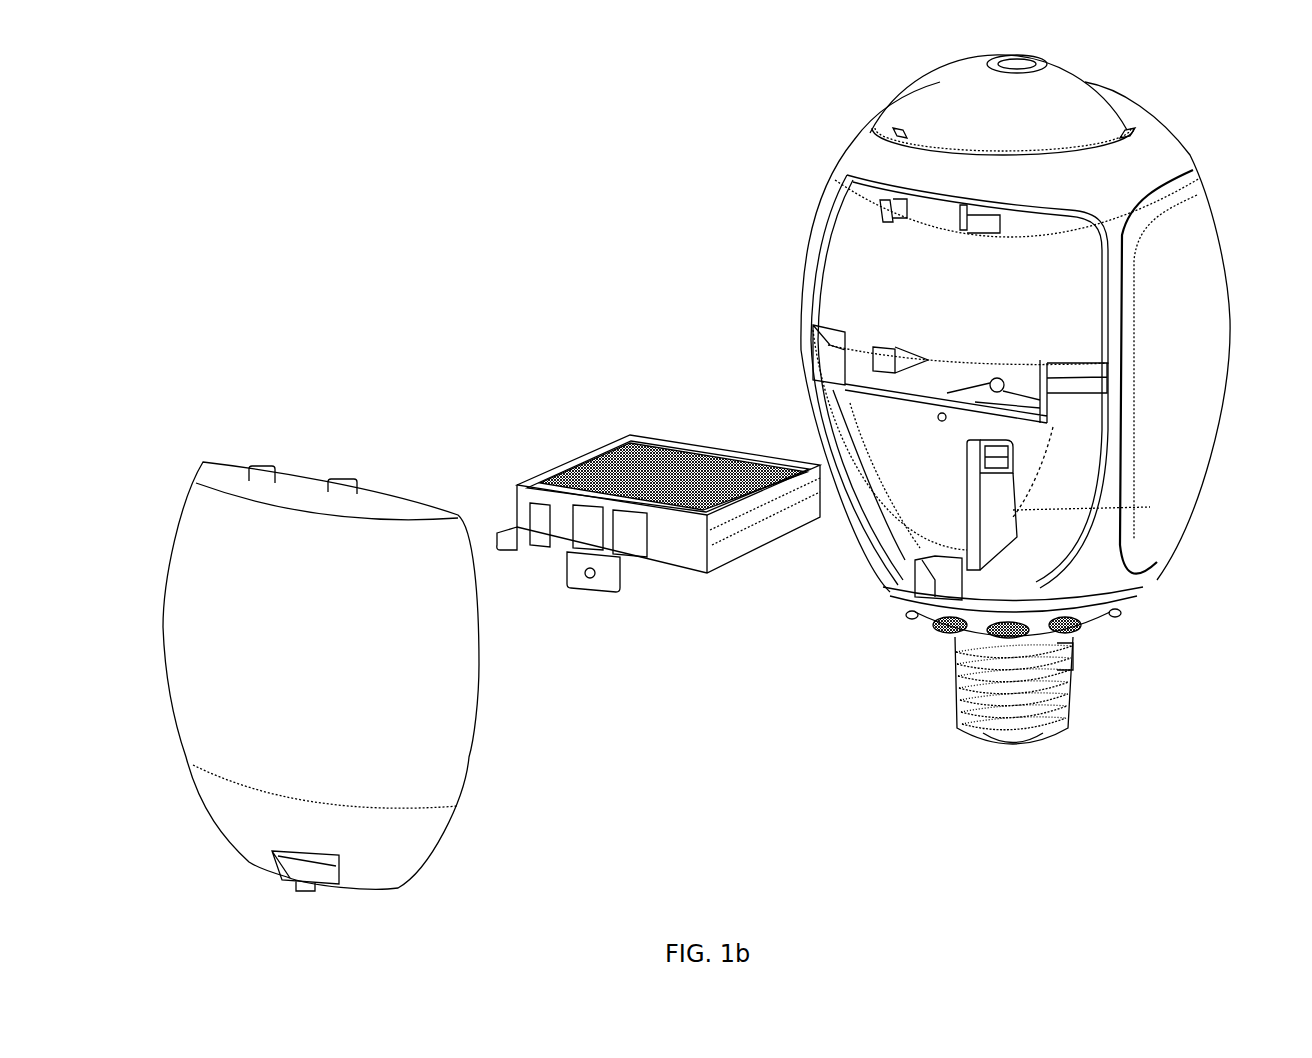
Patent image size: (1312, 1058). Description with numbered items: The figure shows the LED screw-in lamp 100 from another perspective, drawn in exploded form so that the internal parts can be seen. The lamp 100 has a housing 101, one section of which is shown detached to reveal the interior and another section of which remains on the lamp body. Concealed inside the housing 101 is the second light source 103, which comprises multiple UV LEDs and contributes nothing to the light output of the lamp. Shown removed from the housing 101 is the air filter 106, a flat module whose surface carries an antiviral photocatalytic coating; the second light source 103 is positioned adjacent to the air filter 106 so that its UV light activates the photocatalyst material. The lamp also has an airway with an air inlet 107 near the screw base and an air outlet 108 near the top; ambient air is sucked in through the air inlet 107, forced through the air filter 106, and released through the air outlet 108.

The LED screw-in lamp 100 is at (967, 399).
The housing 101 is at (180, 516).
The second light source 103 is at (1003, 384).
The air filter 106 is at (590, 458).
The air inlet 107 is at (953, 633).
The air outlet 108 is at (899, 130).